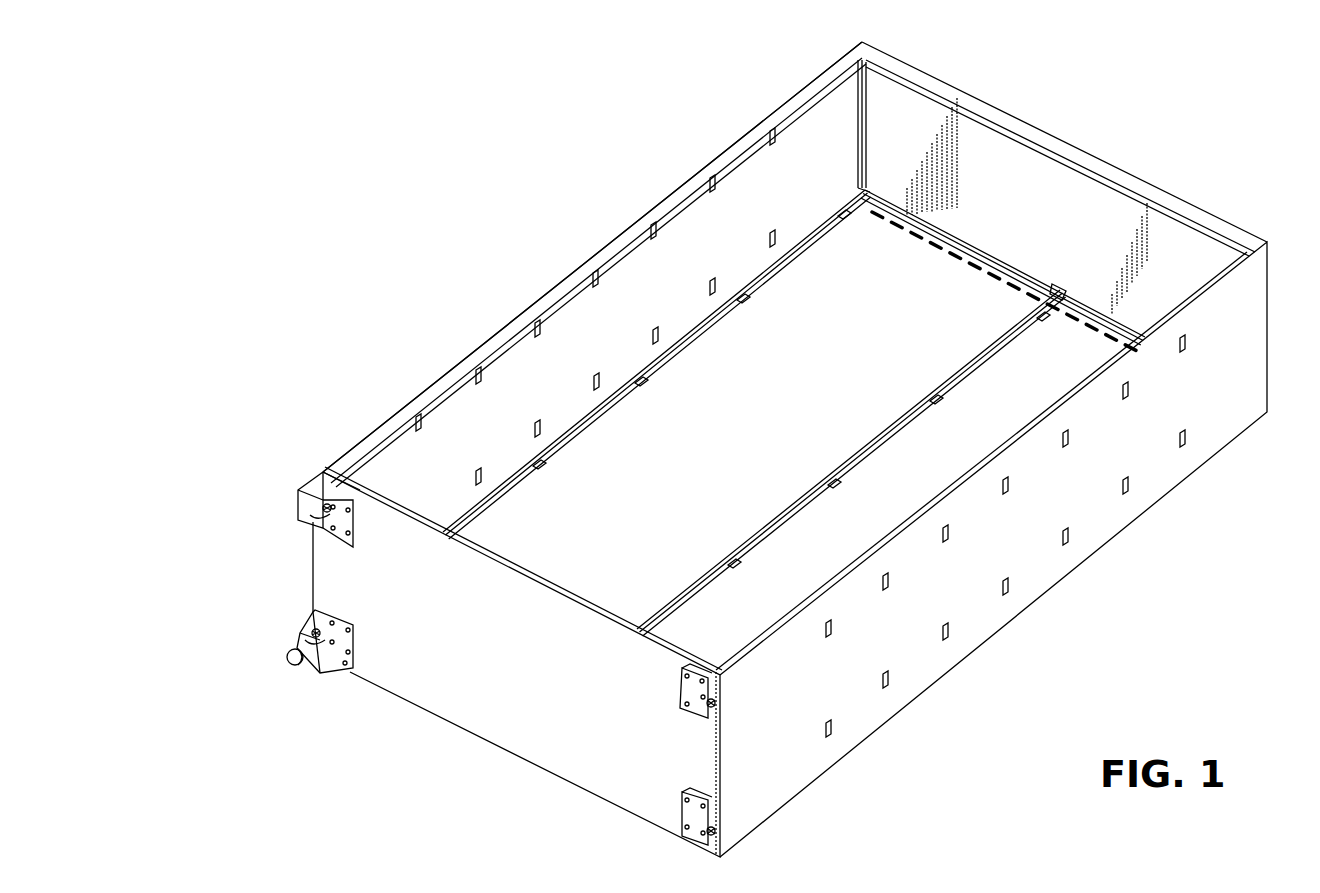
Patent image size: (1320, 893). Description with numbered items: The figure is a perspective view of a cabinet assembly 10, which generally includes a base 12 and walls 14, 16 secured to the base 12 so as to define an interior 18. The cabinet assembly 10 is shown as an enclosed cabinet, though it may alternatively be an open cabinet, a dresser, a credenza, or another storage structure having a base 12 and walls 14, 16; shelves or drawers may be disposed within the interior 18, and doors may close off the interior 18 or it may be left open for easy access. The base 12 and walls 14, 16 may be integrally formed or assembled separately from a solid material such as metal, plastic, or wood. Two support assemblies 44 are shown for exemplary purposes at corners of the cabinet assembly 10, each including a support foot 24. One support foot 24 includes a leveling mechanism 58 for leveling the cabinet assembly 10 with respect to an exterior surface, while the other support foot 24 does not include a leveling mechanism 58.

The cabinet assembly 10 is at (435, 178).
The base 12 is at (592, 765).
The wall 14 is at (632, 285).
The wall 16 is at (1043, 558).
The interior 18 is at (827, 252).
The support foot 24 is at (297, 505).
The support assembly 44 is at (296, 483).
The leveling mechanism 58 is at (288, 661).